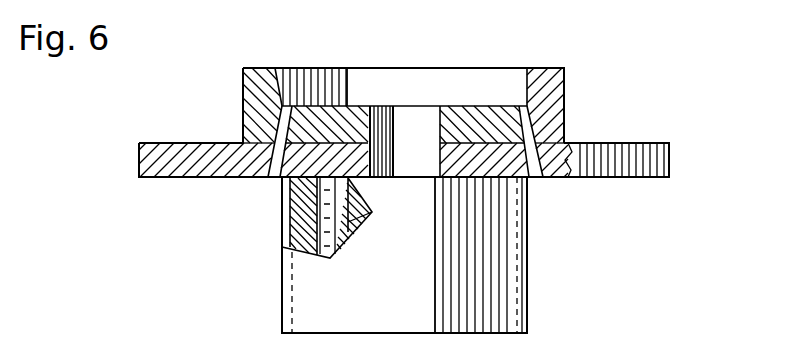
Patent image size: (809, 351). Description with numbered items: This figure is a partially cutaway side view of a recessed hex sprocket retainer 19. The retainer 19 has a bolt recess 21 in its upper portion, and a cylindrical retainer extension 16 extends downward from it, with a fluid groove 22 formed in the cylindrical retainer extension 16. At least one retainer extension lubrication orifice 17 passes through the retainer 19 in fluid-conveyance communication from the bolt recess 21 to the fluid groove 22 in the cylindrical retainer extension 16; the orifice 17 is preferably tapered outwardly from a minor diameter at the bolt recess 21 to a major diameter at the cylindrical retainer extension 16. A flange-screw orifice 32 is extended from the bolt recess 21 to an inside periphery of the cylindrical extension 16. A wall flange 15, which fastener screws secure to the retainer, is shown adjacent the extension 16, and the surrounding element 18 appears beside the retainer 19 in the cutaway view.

The recessed hex sprocket retainer 19 is at (618, 78).
The bolt recess 21 is at (476, 98).
The flange-screw orifice 32 is at (407, 140).
The panel 18 is at (650, 155).
The retainer extension lubrication orifice 17 is at (275, 172).
The cylindrical retainer extension 16 is at (472, 240).
The fluid groove 22 is at (517, 277).
The wall flange 15 is at (363, 220).